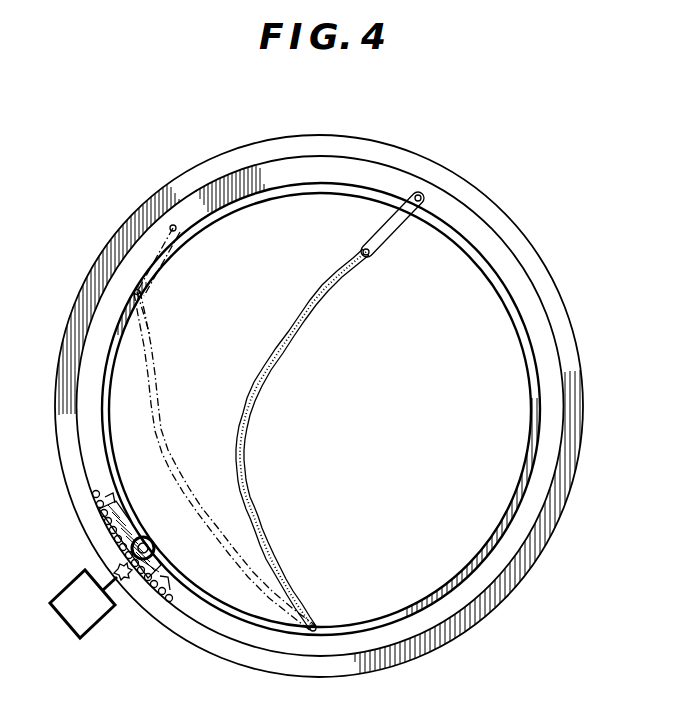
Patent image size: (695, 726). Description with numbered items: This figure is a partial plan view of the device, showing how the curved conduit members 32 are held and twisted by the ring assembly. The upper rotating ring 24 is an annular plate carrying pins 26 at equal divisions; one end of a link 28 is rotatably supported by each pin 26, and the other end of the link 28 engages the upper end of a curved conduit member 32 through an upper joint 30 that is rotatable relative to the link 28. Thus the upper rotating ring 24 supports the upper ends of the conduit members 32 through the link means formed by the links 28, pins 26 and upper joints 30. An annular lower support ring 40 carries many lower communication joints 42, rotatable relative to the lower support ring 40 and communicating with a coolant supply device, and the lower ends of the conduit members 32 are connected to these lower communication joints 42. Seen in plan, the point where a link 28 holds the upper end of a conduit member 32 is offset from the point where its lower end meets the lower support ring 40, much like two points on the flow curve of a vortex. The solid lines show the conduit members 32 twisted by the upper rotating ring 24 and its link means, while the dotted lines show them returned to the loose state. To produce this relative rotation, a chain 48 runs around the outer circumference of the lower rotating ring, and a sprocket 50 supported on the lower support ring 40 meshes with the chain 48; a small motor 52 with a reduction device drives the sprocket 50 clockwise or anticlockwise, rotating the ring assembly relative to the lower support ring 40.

The upper rotating ring 24 is at (510, 543).
The pin 26 is at (421, 197).
The link 28 is at (397, 220).
The upper joint 30 is at (367, 256).
The curved conduit member 32 is at (292, 338).
The lower support ring 40 is at (406, 162).
The lower communication joint 42 is at (313, 632).
The chain 48 is at (165, 607).
The sprocket 50 is at (120, 565).
The small motor 52 is at (85, 612).